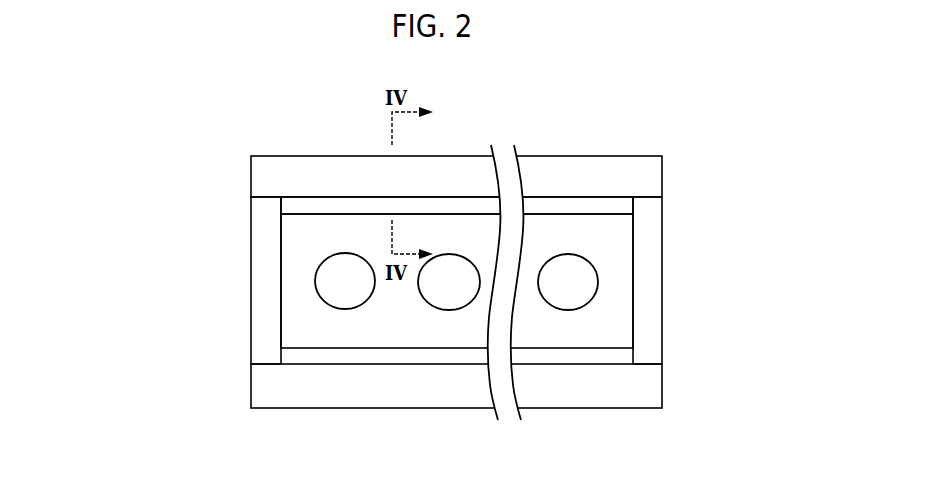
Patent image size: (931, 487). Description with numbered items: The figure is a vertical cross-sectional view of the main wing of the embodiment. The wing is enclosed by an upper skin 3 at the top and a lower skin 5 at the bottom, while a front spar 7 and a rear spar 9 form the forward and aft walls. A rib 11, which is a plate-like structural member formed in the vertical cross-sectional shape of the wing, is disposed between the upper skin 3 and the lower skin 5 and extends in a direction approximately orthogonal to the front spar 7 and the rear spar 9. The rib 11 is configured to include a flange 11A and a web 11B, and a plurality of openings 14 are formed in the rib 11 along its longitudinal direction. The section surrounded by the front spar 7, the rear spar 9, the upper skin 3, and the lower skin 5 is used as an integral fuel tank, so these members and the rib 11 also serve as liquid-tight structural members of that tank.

The upper skin 3 is at (592, 170).
The lower skin 5 is at (416, 397).
The front spar 7 is at (263, 272).
The rear spar 9 is at (648, 320).
The rib 11 is at (526, 272).
The flange 11A is at (622, 208).
The web 11B is at (618, 247).
The opening 14 is at (330, 297).